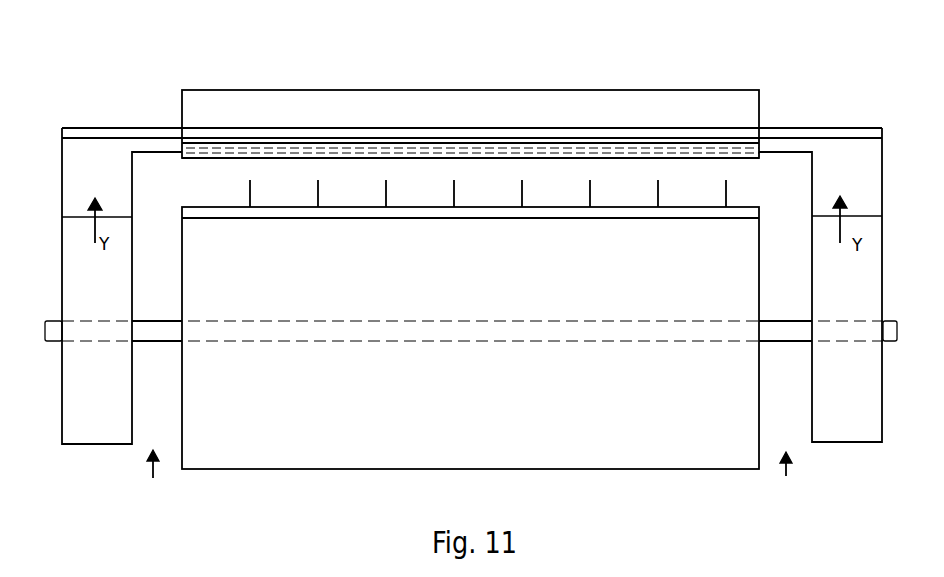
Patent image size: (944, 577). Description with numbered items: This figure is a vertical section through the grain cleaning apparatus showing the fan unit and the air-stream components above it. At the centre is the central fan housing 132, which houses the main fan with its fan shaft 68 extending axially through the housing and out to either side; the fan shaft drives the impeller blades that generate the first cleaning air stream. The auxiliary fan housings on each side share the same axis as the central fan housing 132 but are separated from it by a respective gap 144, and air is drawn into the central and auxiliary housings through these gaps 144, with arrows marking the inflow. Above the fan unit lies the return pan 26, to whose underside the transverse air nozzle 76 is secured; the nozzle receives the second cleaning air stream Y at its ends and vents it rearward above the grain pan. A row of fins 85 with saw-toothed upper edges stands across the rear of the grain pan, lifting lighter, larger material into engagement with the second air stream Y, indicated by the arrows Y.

The return pan 26 is at (702, 90).
The transverse air nozzle 76 is at (232, 156).
The fins 85 is at (521, 191).
The central fan housing 132 is at (323, 460).
The fan shaft 68 is at (50, 327).
The gap 144 is at (472, 488).